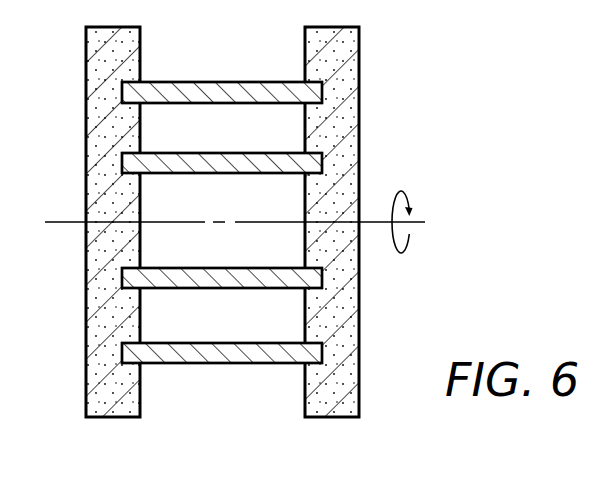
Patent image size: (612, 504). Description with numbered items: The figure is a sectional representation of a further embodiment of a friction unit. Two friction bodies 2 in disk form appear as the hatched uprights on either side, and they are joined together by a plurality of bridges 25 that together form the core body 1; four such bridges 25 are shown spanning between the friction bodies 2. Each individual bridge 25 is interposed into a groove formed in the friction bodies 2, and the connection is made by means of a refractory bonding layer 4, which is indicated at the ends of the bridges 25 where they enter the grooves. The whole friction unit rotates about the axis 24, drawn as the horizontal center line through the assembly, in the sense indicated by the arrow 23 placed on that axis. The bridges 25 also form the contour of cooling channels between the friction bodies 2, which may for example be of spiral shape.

The core body 1 is at (237, 370).
The friction body 2 is at (103, 47).
The refractory bonding layer 4 is at (125, 92).
The arrow 23 is at (406, 195).
The axis 24 is at (65, 224).
The bridge 25 is at (230, 165).